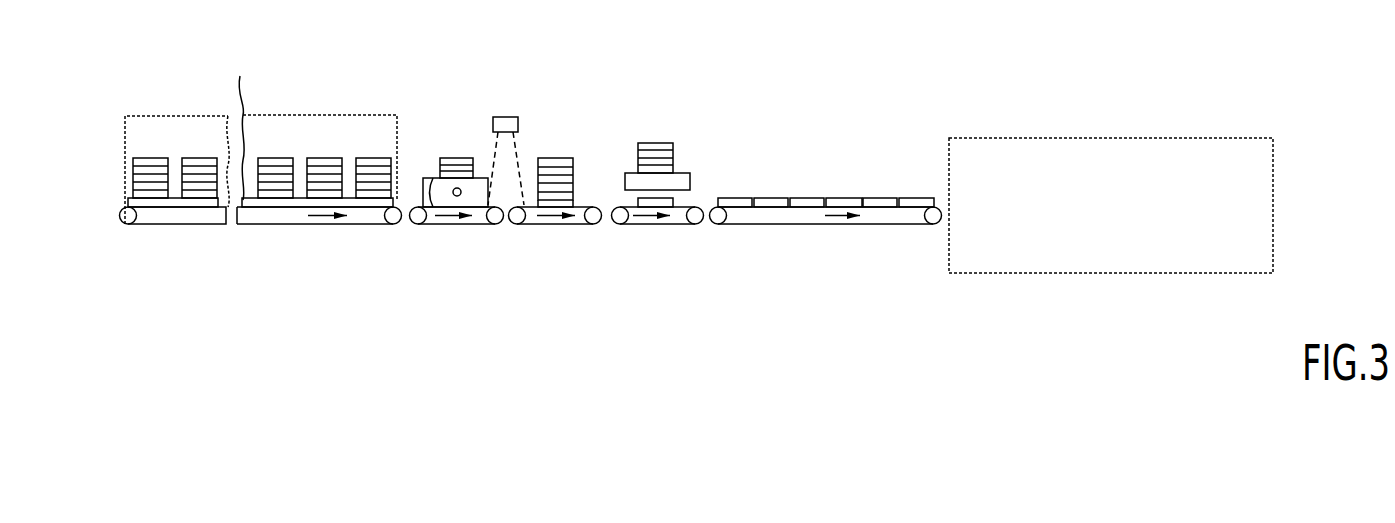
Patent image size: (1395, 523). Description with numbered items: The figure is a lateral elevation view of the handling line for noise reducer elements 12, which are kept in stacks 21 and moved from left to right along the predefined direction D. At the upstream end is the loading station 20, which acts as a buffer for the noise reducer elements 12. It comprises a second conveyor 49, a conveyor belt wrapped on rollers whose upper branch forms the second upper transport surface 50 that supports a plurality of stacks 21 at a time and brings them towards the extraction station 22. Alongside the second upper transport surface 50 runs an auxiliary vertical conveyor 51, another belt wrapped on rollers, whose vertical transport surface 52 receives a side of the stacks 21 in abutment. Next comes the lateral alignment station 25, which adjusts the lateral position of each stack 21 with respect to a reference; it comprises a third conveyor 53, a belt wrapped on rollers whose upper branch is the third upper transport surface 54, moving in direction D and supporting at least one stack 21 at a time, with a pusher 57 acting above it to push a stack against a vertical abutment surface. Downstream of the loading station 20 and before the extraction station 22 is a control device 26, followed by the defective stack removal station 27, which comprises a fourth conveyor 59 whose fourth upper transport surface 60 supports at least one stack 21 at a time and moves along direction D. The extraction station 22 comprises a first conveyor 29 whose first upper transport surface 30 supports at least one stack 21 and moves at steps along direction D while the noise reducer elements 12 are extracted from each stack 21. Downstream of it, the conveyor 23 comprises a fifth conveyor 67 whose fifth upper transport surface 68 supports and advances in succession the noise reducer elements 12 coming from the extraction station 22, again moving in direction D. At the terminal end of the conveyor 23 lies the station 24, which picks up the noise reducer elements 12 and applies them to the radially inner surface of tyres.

The noise reducer element 12 is at (157, 203).
The loading station 20 is at (319, 273).
The stack 21 is at (419, 125).
The extraction station 22 is at (664, 277).
The conveyor 23 is at (825, 281).
The station 24 is at (1157, 195).
The lateral alignment station 25 is at (461, 268).
The control device 26 is at (503, 117).
The defective stack removal station 27 is at (559, 268).
The first conveyor 29 is at (612, 263).
The first upper transport surface 30 is at (682, 203).
The second conveyor 49 is at (173, 263).
The second upper transport surface 50 is at (240, 124).
The auxiliary vertical conveyor 51 is at (171, 125).
The vertical transport surface 52 is at (272, 127).
The third conveyor 53 is at (408, 263).
The third upper transport surface 54 is at (430, 180).
The pusher 57 is at (482, 178).
The fourth conveyor 59 is at (580, 152).
The fourth upper transport surface 60 is at (527, 207).
The fifth conveyor 67 is at (742, 265).
The fifth upper transport surface 68 is at (937, 207).
The predefined direction D is at (318, 224).